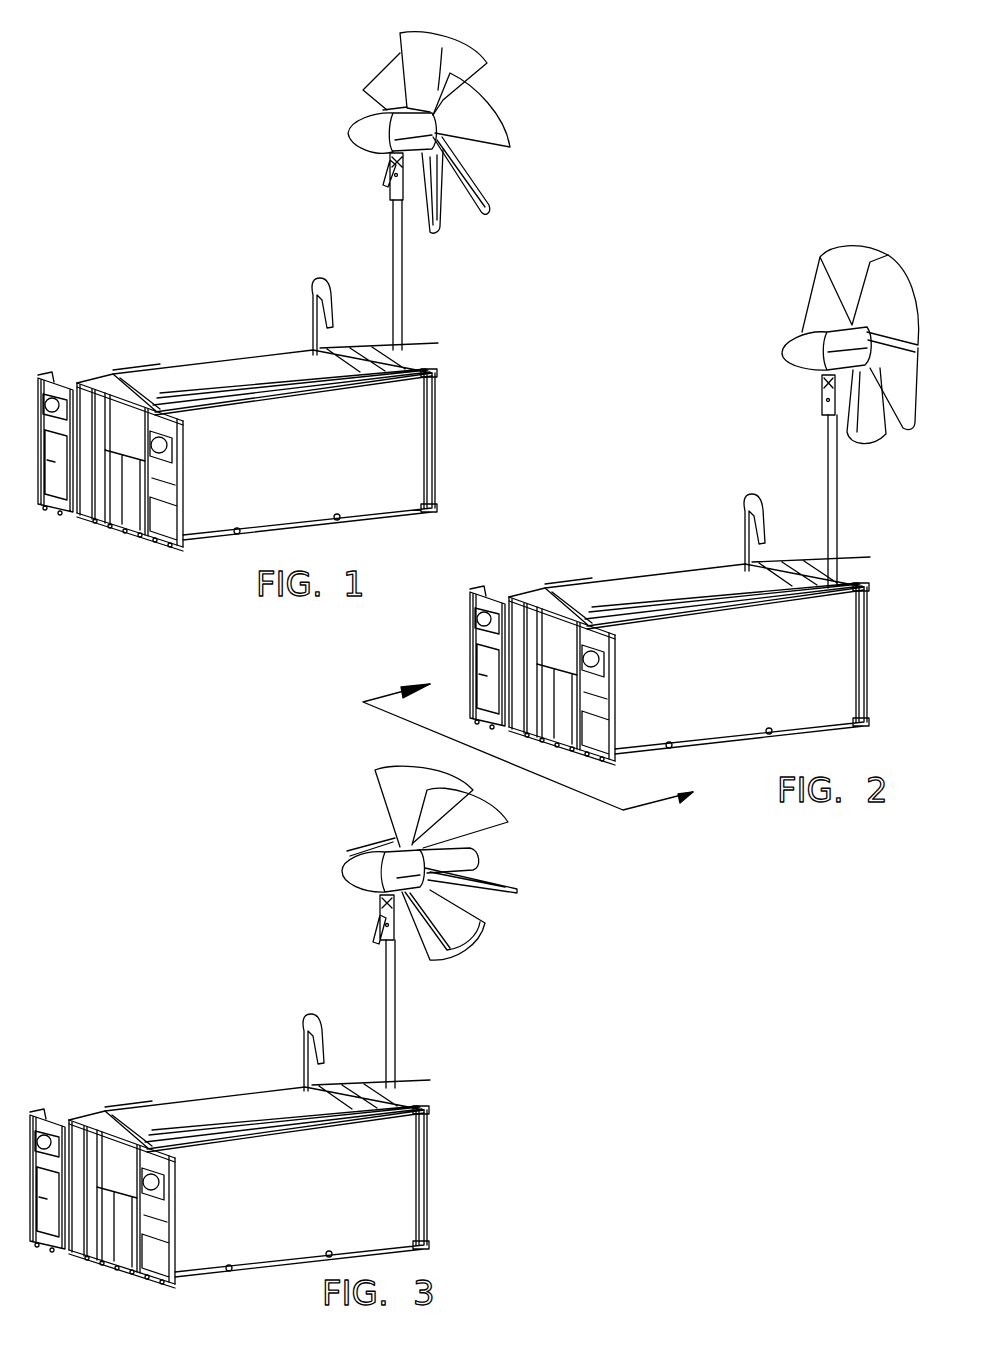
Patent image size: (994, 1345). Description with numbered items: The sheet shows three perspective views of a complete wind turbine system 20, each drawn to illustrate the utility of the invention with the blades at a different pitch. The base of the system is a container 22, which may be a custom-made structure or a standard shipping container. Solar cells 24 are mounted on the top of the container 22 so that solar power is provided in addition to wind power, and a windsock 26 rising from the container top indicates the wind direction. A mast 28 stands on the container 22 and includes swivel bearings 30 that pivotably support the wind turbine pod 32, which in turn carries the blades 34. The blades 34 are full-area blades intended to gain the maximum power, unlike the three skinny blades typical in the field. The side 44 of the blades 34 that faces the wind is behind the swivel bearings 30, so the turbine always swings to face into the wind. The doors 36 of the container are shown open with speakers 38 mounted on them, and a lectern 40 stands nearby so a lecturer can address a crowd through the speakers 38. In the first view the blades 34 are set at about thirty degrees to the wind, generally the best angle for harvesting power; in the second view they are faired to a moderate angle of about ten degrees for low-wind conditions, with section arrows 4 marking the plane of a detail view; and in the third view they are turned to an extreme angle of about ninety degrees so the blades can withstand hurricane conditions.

In FIG. 2, the section line 4 is at (539, 735).
In FIG. 1, the wind turbine system 20 is at (411, 339).
In FIG. 1, the container 22 is at (309, 463).
In FIG. 1, the solar cells 24 is at (390, 353).
In FIG. 1, the windsock 26 is at (333, 303).
In FIG. 1, the mast 28 is at (402, 248).
In FIG. 1, the swivel bearings 30 is at (403, 173).
In FIG. 1, the wind turbine pod 32 is at (412, 127).
In FIG. 1, the blades 34 is at (430, 43).
In FIG. 2, the blades 34 is at (880, 283).
In FIG. 3, the blades 34 is at (458, 925).
In FIG. 1, the doors 36 is at (60, 517).
In FIG. 1, the speakers 38 is at (60, 387).
In FIG. 1, the lectern 40 is at (127, 537).
In FIG. 1, the side of the blades 44 is at (432, 70).